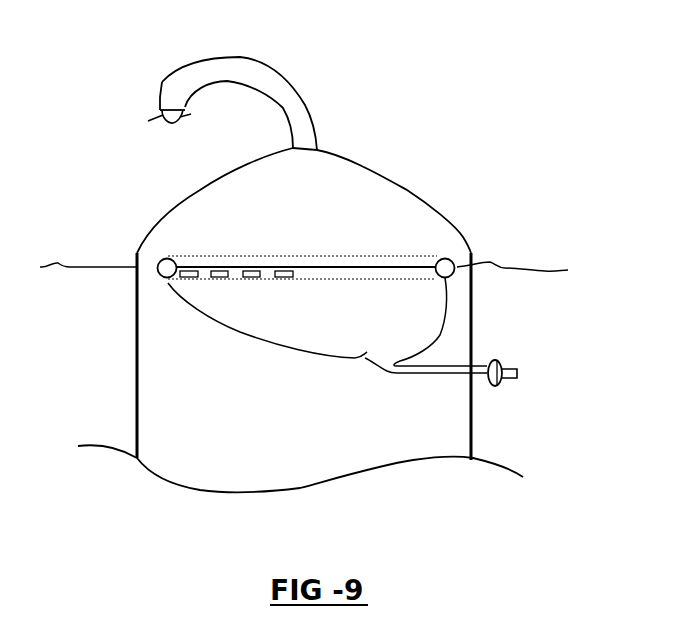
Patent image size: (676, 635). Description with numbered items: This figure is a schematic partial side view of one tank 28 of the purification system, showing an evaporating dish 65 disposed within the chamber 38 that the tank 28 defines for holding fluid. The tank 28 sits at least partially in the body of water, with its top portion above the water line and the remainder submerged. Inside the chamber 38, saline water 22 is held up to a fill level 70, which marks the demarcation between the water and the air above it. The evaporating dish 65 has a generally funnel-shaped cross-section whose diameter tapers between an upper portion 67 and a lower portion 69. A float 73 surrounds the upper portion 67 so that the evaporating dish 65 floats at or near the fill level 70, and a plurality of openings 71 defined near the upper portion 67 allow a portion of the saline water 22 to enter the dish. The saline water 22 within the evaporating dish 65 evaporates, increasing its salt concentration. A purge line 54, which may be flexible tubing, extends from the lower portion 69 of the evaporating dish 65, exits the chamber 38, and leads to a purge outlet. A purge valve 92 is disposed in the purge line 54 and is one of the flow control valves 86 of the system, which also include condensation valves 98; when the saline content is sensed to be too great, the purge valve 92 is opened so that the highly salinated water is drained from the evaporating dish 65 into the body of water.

The tank 28 is at (122, 145).
The flow control valve 86 is at (178, 108).
The condensation valve 98 is at (162, 100).
The evaporating dish 65 is at (173, 298).
The chamber 38 is at (167, 423).
The fill level 70 is at (158, 267).
The float 73 is at (443, 268).
The upper portion 67 is at (277, 284).
The openings 71 is at (222, 268).
The saline water 22 is at (263, 325).
The lower portion 69 is at (360, 360).
The purge line 54 is at (420, 372).
The purge valve 92 is at (505, 362).